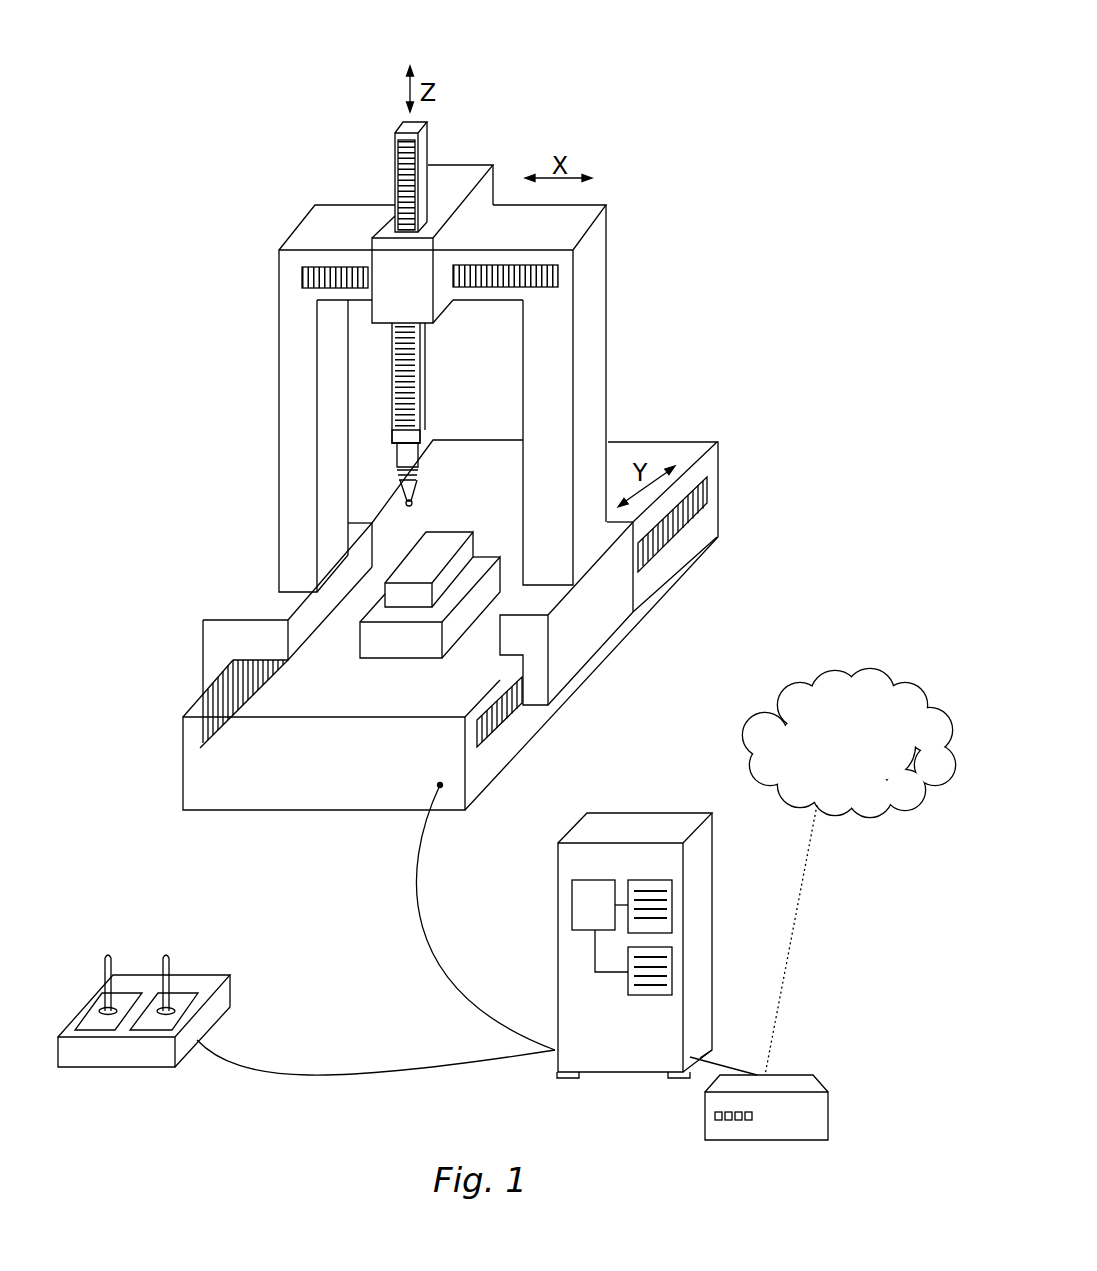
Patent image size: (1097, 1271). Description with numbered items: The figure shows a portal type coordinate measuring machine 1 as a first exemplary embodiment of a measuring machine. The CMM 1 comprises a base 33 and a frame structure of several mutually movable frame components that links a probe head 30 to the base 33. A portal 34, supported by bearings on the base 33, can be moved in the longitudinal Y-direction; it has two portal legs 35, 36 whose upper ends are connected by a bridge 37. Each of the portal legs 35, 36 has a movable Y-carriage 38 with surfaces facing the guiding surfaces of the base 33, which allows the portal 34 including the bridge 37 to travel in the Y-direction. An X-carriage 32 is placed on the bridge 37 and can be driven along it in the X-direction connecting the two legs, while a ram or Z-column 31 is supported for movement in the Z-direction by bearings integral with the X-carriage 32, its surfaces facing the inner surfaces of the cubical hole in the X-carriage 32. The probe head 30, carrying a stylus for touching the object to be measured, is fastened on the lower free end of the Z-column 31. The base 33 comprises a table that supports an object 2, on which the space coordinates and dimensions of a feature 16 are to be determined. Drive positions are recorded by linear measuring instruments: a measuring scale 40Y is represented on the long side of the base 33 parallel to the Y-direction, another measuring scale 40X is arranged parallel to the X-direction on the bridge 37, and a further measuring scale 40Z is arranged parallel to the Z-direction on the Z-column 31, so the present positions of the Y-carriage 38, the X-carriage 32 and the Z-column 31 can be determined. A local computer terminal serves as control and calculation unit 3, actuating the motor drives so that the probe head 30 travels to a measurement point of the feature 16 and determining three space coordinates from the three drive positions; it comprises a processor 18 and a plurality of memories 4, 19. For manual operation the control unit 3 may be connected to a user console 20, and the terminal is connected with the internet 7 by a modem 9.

The coordinate measuring machine 1 is at (632, 185).
The object 2 is at (413, 640).
The control and calculation unit 3 is at (640, 825).
The memory 4 is at (668, 975).
The internet 7 is at (768, 682).
The modem 9 is at (793, 1118).
The feature 16 is at (440, 560).
The processor 18 is at (578, 888).
The memory 19 is at (662, 922).
The user console 20 is at (228, 943).
The probe head 30 is at (440, 465).
The Z-column 31 is at (392, 130).
The X-carriage 32 is at (388, 236).
The base 33 is at (205, 795).
The portal 34 is at (268, 453).
The portal leg 35 is at (288, 362).
The portal leg 36 is at (596, 368).
The bridge 37 is at (315, 240).
The Y-carriage 38 is at (258, 598).
The measuring scale 40X is at (558, 272).
The measuring scale 40Y is at (677, 527).
The measuring scale 40Z is at (410, 163).